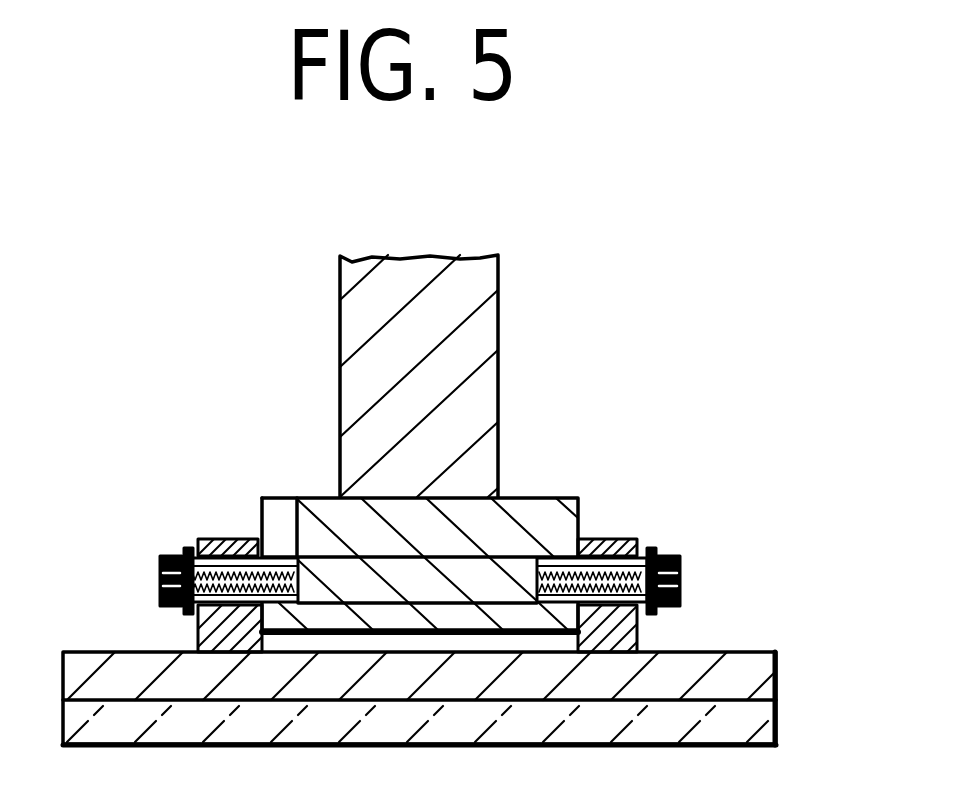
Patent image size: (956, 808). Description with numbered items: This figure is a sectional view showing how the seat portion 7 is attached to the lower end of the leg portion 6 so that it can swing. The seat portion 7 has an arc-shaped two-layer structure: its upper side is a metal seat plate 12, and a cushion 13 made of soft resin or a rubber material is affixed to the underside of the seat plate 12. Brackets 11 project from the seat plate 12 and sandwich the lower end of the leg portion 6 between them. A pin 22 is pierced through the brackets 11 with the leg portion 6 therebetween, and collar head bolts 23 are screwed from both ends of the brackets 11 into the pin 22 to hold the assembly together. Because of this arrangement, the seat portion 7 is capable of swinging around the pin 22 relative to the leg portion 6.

The leg portion 6 is at (533, 497).
The seat portion 7 is at (718, 615).
The brackets 11 is at (222, 538).
The seat plate 12 is at (780, 662).
The cushion 13 is at (777, 722).
The pin 22 is at (297, 502).
The collar head bolts 23 is at (157, 575).